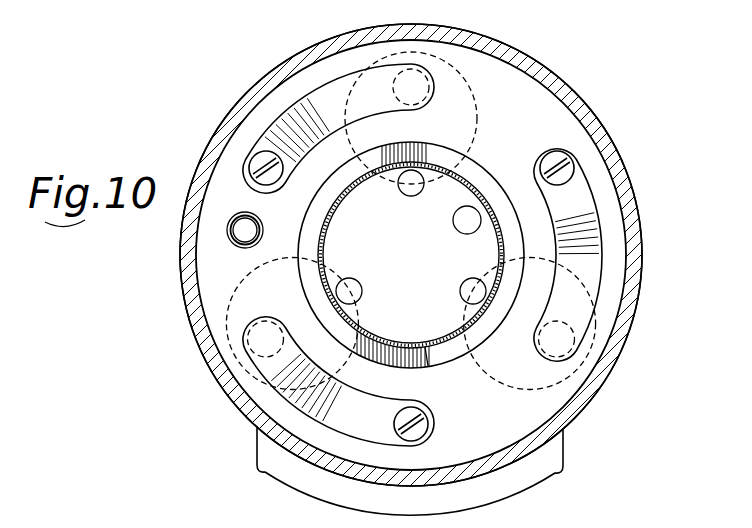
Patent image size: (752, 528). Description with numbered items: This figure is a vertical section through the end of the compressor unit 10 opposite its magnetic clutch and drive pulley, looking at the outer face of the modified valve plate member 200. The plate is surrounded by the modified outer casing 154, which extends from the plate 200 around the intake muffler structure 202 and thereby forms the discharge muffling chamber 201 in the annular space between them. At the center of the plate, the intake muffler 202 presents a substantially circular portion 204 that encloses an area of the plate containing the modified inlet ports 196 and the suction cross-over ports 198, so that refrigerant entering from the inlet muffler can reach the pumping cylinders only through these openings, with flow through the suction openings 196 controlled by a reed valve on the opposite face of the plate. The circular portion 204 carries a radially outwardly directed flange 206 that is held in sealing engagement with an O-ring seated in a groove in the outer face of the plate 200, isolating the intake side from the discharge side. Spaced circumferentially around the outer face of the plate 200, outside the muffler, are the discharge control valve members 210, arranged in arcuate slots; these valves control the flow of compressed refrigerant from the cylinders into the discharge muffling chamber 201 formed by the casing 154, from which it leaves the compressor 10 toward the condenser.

The compressor unit 10 is at (212, 373).
The outer casing 154 is at (493, 43).
The inlet ports 196 is at (410, 185).
The suction cross-over ports 198 is at (463, 222).
The valve plate member 200 is at (553, 402).
The discharge muffling chamber 201 is at (527, 103).
The intake muffler structure 202 is at (428, 366).
The circular portion 204 is at (473, 185).
The radially outwardly directed flange 206 is at (300, 243).
The discharge control valve members 210 is at (317, 92).